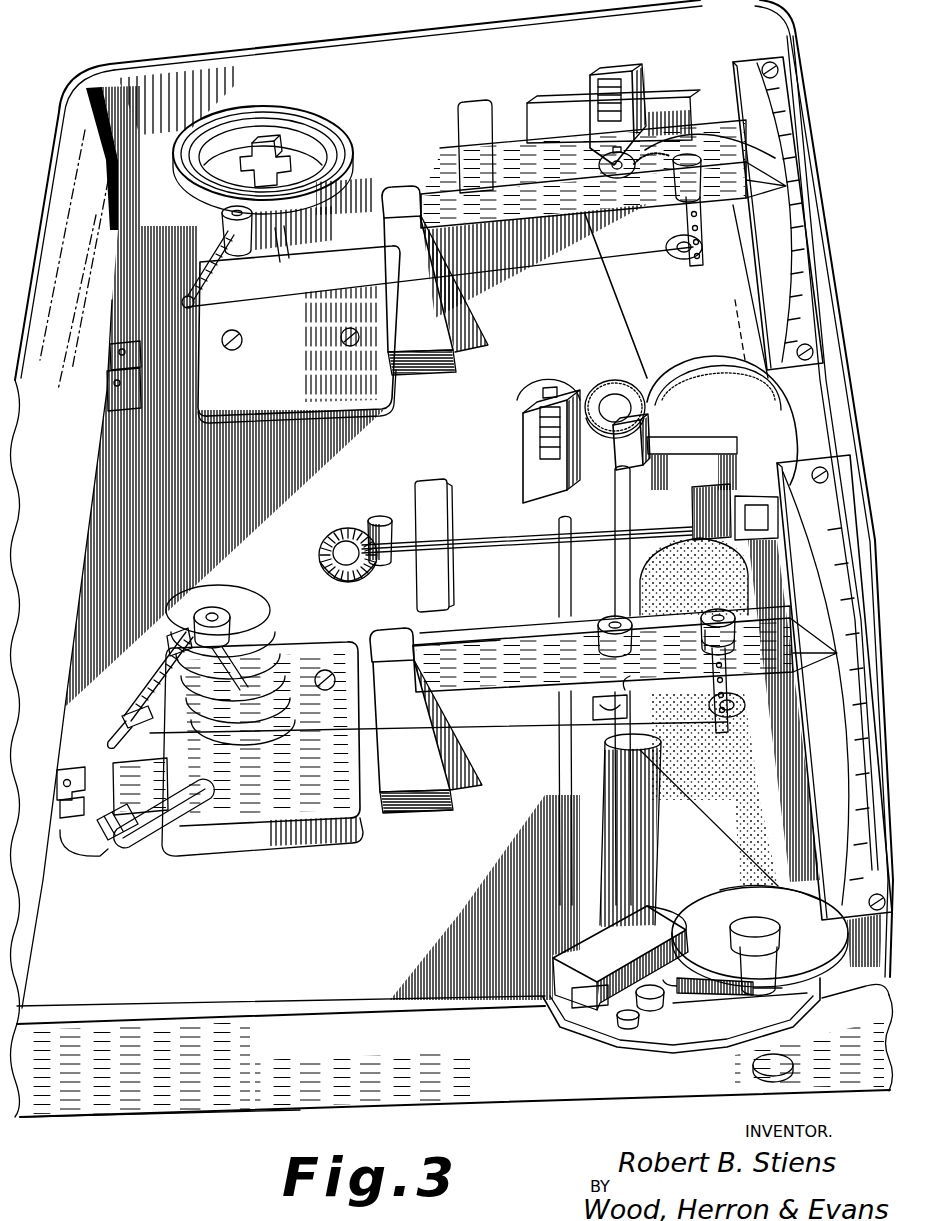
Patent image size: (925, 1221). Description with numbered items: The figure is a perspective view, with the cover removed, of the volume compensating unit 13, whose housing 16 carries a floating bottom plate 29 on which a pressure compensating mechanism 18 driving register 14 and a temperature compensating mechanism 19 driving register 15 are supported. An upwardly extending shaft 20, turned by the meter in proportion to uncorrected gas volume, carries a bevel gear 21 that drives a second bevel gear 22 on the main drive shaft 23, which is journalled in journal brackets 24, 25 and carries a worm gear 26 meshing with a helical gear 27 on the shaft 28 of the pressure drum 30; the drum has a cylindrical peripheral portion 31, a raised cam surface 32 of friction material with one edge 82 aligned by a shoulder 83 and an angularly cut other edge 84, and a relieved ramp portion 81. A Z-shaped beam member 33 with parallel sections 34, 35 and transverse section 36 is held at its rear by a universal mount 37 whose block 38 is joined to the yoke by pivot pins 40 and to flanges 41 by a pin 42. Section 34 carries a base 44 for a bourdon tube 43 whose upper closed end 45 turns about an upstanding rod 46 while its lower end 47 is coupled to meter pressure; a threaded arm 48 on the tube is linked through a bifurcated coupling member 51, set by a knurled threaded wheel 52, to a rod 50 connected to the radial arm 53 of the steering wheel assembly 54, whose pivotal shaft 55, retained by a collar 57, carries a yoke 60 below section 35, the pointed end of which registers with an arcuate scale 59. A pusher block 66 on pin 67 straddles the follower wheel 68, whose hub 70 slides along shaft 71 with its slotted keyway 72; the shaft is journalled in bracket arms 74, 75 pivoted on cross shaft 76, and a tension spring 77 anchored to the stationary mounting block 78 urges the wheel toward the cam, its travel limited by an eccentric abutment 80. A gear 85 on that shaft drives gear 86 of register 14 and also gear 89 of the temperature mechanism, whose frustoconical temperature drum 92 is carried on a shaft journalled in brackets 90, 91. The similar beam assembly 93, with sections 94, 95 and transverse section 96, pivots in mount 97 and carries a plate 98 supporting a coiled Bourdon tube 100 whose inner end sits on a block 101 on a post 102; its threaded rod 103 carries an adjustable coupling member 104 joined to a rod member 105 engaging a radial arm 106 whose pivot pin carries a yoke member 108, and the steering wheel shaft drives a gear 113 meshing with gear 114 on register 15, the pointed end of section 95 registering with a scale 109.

The compensating unit 13 is at (150, 1145).
The register 14 is at (514, 443).
The register 15 is at (644, 60).
The housing 16 is at (408, 50).
The pressure compensating mechanism 18 is at (398, 860).
The temperature compensating mechanism 19 is at (402, 130).
The shaft 20 is at (345, 552).
The bevel gear 21 is at (332, 576).
The second bevel gear 22 is at (378, 568).
The main drive shaft 23 is at (483, 534).
The journal bracket 24 is at (441, 500).
The journal bracket 25 is at (773, 515).
The worm gear 26 is at (663, 500).
The helical gear 27 is at (733, 498).
The shaft 28 is at (790, 968).
The floating bottom plate 29 is at (508, 505).
The pressure drum 30 is at (724, 923).
The peripheral portion 31 is at (740, 886).
The raised cam surface 32 is at (698, 845).
The Z-shaped beam member 33 is at (447, 762).
The parallel section 34 is at (442, 812).
The parallel section 35 is at (525, 638).
The transverse section 36 is at (409, 717).
The universal mount 37 is at (62, 862).
The block 38 is at (62, 800).
The transverse pivot pins 40 is at (62, 836).
The spaced flanges 41 is at (88, 766).
The pin 42 is at (58, 778).
The bourdon tube 43 is at (252, 590).
The base 44 is at (270, 805).
The upper closed end 45 is at (180, 645).
The upstanding rod 46 is at (242, 641).
The lower end 47 is at (173, 856).
The threaded arm 48 is at (164, 681).
The rod 50 is at (530, 728).
The bifurcated coupling member 51 is at (152, 734).
The knurled threaded wheel 52 is at (140, 712).
The radial arm 53 is at (721, 732).
The steering wheel assembly 54 is at (704, 648).
The pivotal shaft 55 is at (722, 612).
The collar 57 is at (700, 632).
The arcuate scale 59 is at (845, 605).
The yoke 60 is at (748, 712).
The pusher block 66 is at (618, 676).
The pin 67 is at (604, 640).
The follower wheel 68 is at (592, 712).
The hub 70 is at (618, 745).
The shaft 71 is at (620, 595).
The slotted keyway 72 is at (626, 572).
The bracket arm 74 is at (619, 967).
The bracket arm 75 is at (640, 445).
The cross shaft 76 is at (579, 946).
The tension spring 77 is at (713, 1000).
The stationary mounting block 78 is at (690, 1042).
The adjustable eccentric abutment 80 is at (628, 1035).
The ramp portion 81 is at (781, 870).
The edge 82 is at (778, 890).
The shoulder 83 is at (775, 934).
The edge 84 is at (745, 838).
The gear 85 is at (616, 383).
The gear 86 is at (556, 378).
The gear 89 is at (722, 420).
The journal bracket 90 is at (726, 447).
The journal bracket 91 is at (678, 100).
The temperature drum 92 is at (620, 308).
The beam assembly 93 is at (556, 248).
The parallel section 94 is at (408, 375).
The parallel section 95 is at (603, 174).
The transverse section 96 is at (422, 304).
The mount 97 is at (100, 399).
The plate 98 is at (299, 300).
The coiled Bourdon tube 100 is at (332, 112).
The block 101 is at (281, 144).
The post 102 is at (286, 260).
The threaded rod 103 is at (255, 236).
The adjustable coupling member 104 is at (200, 301).
The rod member 105 is at (355, 284).
The radial arm 106 is at (690, 268).
The yoke member 108 is at (672, 265).
The scale 109 is at (800, 218).
The gear 113 is at (670, 160).
The gear 114 is at (620, 172).